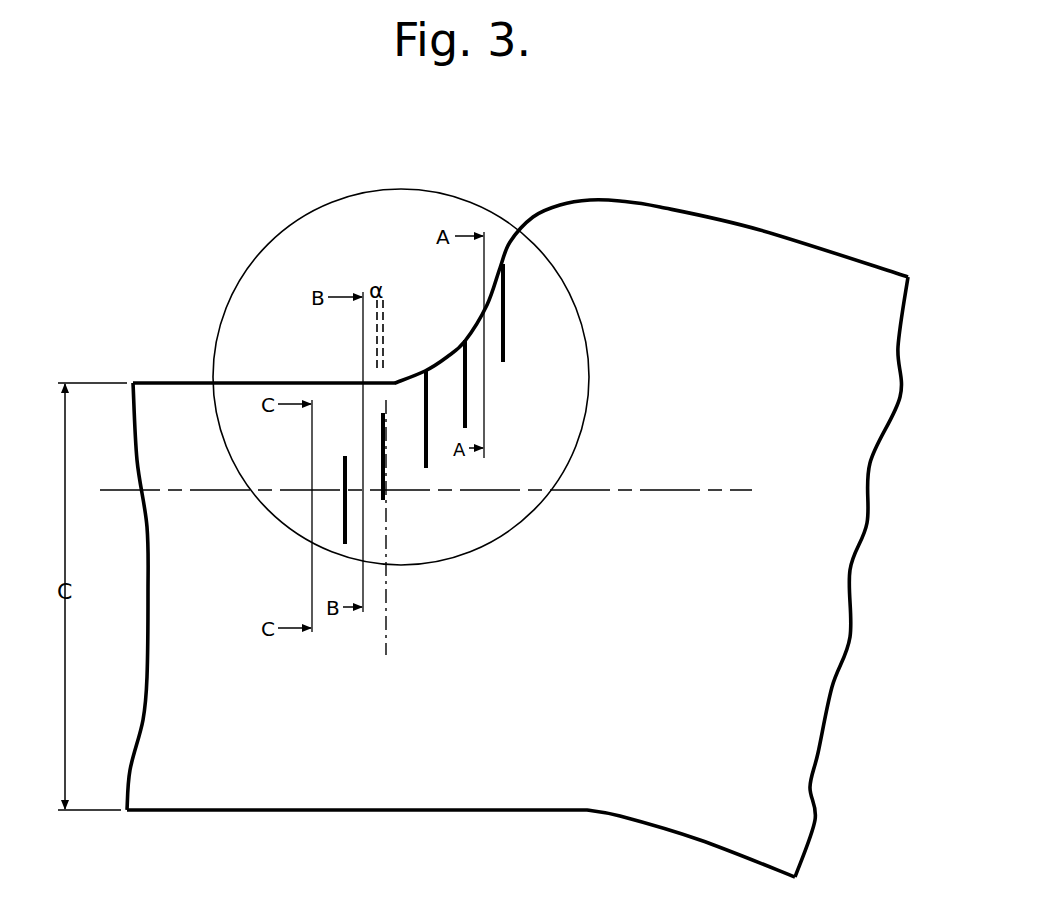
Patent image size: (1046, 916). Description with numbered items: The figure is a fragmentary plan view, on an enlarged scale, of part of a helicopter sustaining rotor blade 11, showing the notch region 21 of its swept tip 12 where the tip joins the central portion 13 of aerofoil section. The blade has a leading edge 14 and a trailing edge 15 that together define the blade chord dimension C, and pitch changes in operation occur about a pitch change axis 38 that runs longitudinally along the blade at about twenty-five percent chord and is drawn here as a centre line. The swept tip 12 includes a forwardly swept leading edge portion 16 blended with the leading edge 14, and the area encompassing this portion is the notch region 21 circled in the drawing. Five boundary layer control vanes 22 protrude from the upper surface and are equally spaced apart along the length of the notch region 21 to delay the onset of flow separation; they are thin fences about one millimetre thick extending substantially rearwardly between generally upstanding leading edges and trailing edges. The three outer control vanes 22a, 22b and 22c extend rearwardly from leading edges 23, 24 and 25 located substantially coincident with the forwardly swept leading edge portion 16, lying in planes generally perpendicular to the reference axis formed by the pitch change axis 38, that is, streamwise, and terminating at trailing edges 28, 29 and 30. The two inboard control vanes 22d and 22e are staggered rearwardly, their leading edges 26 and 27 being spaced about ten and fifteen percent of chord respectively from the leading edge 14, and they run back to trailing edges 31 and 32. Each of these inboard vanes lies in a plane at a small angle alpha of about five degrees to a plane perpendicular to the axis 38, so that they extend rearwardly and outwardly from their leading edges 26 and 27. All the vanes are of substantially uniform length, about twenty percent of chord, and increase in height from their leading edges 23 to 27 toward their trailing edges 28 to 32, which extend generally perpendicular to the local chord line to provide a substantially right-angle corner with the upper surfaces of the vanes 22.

The helicopter sustaining rotor blade 11 is at (814, 209).
The swept tip 12 is at (685, 455).
The central portion 13 is at (181, 566).
The leading edge 14 is at (187, 383).
The trailing edge 15 is at (203, 811).
The forwardly swept leading edge portion 16 is at (508, 240).
The notch region 21 is at (277, 236).
The boundary layer control vanes 22 is at (404, 272).
The outer control vane 22a is at (503, 315).
The outer control vane 22b is at (466, 393).
The outer control vane 22c is at (428, 420).
The inboard control vane 22d is at (386, 478).
The inboard control vane 22e is at (343, 484).
The leading edge of control vane 23 is at (504, 266).
The leading edge of control vane 24 is at (465, 342).
The leading edge of control vane 25 is at (426, 370).
The leading edge of control vane 26 is at (383, 413).
The leading edge of control vane 27 is at (345, 457).
The trailing edge of control vane 28 is at (503, 360).
The trailing edge of control vane 29 is at (466, 428).
The trailing edge of control vane 30 is at (427, 468).
The trailing edge of control vane 31 is at (387, 503).
The trailing edge of control vane 32 is at (344, 545).
The pitch change axis 38 is at (717, 491).